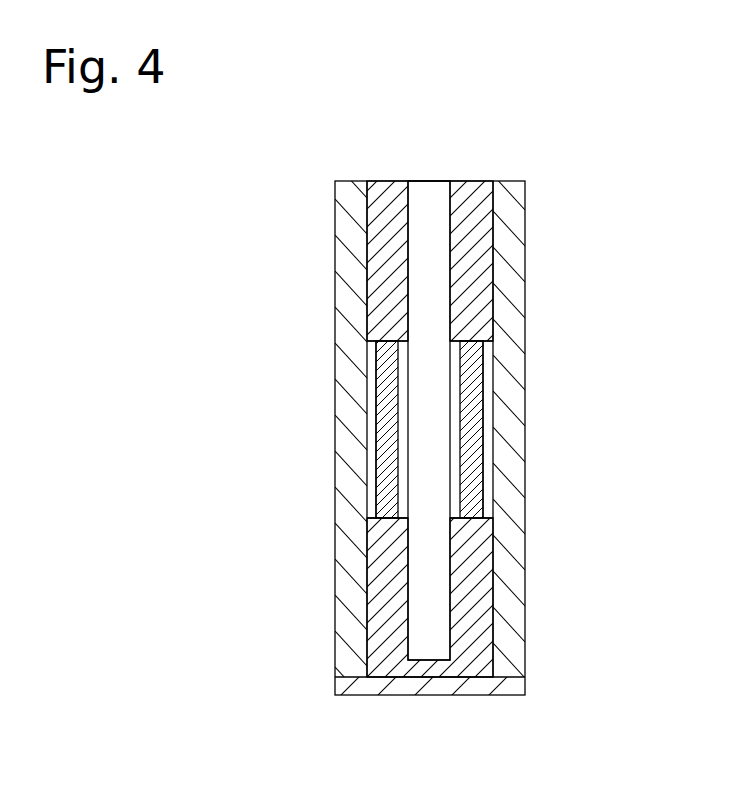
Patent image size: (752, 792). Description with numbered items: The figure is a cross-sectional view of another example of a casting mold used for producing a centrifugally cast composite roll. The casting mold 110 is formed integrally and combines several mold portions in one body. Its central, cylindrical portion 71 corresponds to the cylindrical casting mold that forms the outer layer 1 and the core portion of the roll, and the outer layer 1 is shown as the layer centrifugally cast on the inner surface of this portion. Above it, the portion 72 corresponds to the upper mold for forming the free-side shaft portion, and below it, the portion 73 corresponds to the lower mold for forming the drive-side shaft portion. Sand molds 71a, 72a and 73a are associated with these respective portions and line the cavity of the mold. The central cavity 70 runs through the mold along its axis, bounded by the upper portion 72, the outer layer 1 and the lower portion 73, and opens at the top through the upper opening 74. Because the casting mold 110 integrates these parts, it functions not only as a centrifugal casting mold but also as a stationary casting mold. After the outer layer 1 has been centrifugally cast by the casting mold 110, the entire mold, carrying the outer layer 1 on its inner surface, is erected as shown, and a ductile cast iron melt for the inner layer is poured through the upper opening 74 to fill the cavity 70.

The casting mold 110 is at (610, 374).
The portion corresponding to the cylindrical casting mold 71 is at (513, 403).
The sand mold 71a is at (371, 422).
The portion corresponding to the upper mold 72 is at (510, 260).
The sand mold 72a is at (487, 302).
The portion corresponding to the lower mold 73 is at (512, 578).
The sand mold 73a is at (484, 630).
The upper opening 74 is at (431, 181).
The channel 70 is at (439, 439).
The outer layer 1 is at (484, 466).